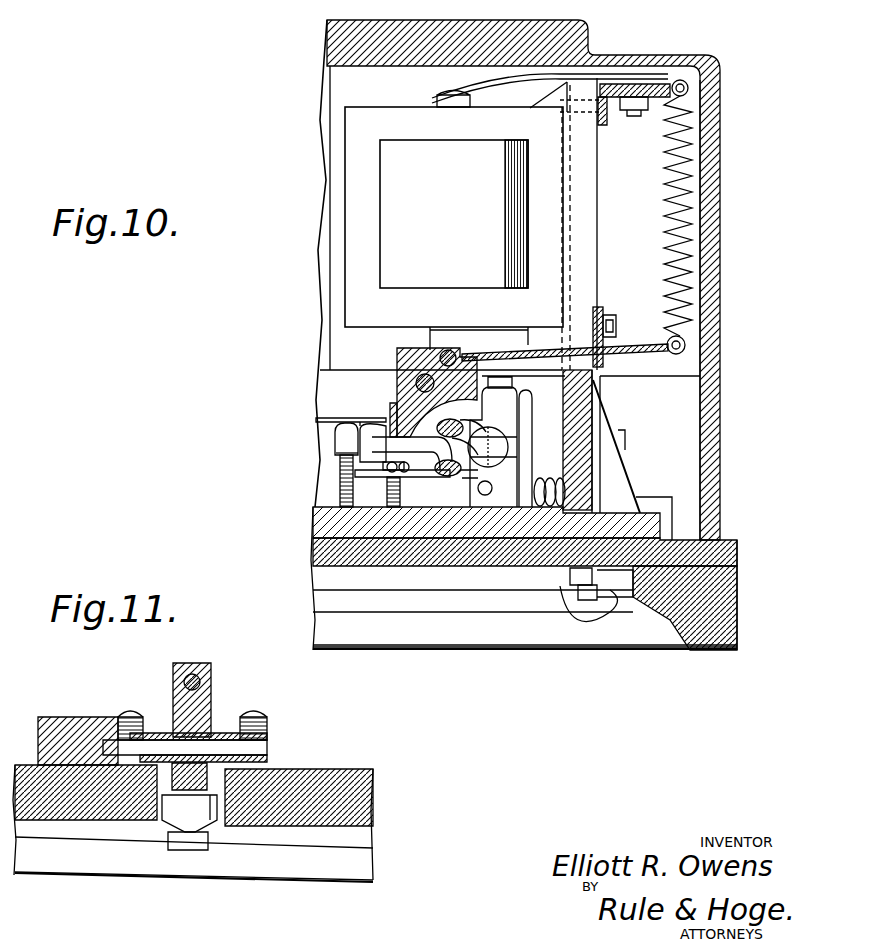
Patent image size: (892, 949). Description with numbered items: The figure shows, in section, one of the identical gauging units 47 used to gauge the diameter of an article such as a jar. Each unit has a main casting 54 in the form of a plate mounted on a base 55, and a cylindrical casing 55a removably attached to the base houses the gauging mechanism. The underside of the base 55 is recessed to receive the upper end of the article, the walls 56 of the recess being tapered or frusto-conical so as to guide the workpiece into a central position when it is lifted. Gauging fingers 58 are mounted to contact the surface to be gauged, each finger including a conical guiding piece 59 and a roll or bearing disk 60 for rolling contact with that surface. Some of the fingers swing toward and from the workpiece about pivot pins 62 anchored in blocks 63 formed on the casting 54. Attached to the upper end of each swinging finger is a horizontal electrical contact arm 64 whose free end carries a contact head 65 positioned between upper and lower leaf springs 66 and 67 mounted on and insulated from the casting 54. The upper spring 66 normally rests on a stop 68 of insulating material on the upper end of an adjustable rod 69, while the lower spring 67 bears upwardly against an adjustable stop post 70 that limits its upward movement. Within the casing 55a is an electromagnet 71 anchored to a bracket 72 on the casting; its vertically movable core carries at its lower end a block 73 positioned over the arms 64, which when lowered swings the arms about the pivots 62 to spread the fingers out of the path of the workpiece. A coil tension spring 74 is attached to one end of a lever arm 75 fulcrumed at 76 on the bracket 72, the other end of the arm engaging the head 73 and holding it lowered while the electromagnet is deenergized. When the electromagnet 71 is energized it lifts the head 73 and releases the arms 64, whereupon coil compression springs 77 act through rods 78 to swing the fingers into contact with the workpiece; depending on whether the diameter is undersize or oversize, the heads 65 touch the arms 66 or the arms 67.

In FIG. 10, the gauging unit 47 is at (724, 162).
In FIG. 10, the main casting 54 is at (636, 510).
In FIG. 10, the base 55 is at (738, 548).
In FIG. 11, the base 55 is at (337, 775).
In FIG. 10, the cylindrical casing 55a is at (707, 318).
In FIG. 10, the walls 56 is at (685, 640).
In FIG. 11, the walls 56 is at (175, 872).
In FIG. 10, the gauging finger 58 is at (568, 600).
In FIG. 10, the conical guiding piece 59 is at (583, 580).
In FIG. 11, the conical guiding piece 59 is at (210, 830).
In FIG. 10, the roll 60 is at (590, 590).
In FIG. 11, the roll 60 is at (168, 812).
In FIG. 11, the pivot pin 62 is at (218, 745).
In FIG. 11, the block 63 is at (60, 720).
In FIG. 10, the electrical contact arm 64 is at (545, 445).
In FIG. 11, the electrical contact arm 64 is at (201, 668).
In FIG. 10, the contact head 65 is at (340, 465).
In FIG. 10, the upper leaf spring 66 is at (350, 422).
In FIG. 10, the lower leaf spring 67 is at (413, 484).
In FIG. 10, the stop 68 is at (334, 440).
In FIG. 10, the adjustable rod 69 is at (340, 487).
In FIG. 10, the adjustable stop post 70 is at (392, 493).
In FIG. 10, the electromagnet 71 is at (385, 185).
In FIG. 10, the bracket 72 is at (598, 186).
In FIG. 10, the block 73 is at (397, 362).
In FIG. 10, the coil tension spring 74 is at (662, 200).
In FIG. 10, the lever arm 75 is at (630, 345).
In FIG. 10, the fulcrum 76 is at (603, 357).
In FIG. 10, the coil compression spring 77 is at (548, 507).
In FIG. 10, the rod 78 is at (485, 495).